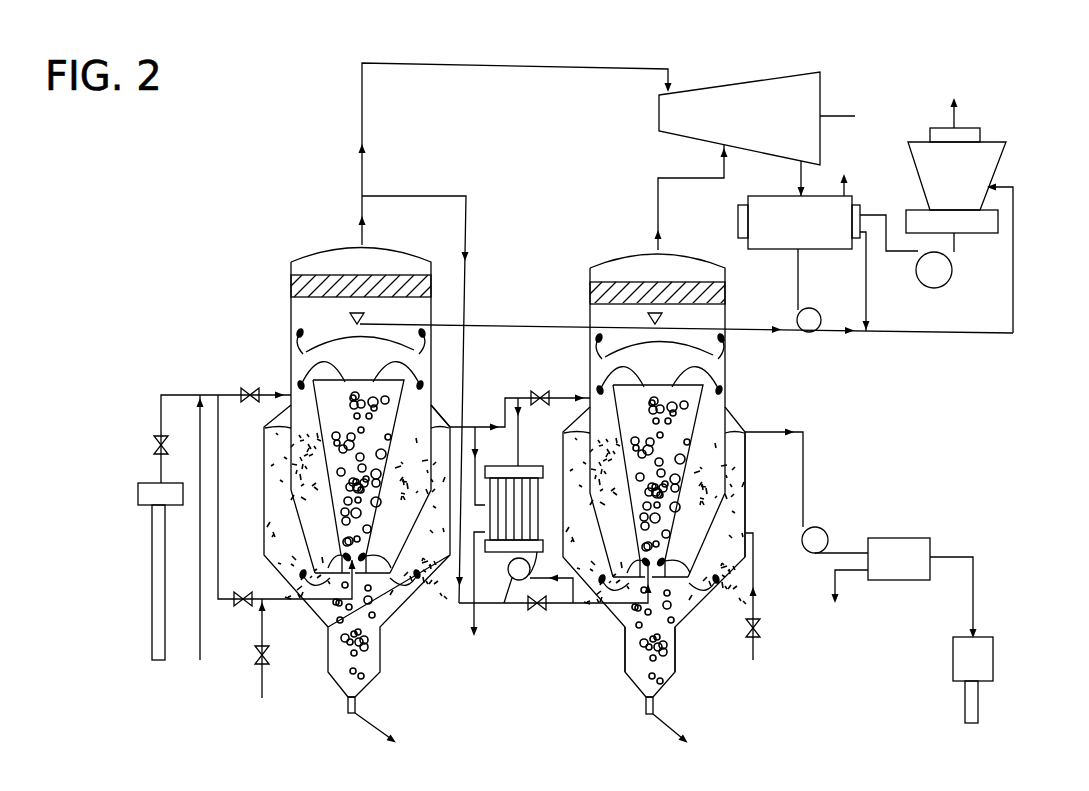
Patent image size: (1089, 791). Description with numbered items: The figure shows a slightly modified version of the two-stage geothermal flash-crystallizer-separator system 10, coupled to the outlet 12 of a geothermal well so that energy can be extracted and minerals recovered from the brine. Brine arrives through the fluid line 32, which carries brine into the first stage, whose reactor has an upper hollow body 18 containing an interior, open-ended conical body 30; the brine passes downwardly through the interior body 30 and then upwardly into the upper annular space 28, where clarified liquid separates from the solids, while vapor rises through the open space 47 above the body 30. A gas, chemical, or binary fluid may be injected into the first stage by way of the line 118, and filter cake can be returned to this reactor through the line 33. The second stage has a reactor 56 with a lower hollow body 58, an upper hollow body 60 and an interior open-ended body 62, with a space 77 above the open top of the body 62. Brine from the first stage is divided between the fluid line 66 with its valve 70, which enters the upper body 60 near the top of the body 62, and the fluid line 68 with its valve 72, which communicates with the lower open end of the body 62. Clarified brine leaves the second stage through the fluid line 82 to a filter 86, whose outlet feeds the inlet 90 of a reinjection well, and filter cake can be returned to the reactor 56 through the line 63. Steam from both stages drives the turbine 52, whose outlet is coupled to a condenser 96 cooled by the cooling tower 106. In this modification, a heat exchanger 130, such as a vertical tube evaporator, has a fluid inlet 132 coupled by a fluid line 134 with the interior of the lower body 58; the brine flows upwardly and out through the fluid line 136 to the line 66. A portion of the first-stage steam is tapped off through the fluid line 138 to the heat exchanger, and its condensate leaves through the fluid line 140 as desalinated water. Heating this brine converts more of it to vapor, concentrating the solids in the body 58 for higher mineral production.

The system 10 is at (246, 298).
The outlet of geothermal well 12 is at (160, 483).
The upper hollow body 18 is at (425, 334).
The upper annular space 28 is at (436, 420).
The interior hollow body 30 is at (330, 483).
The fluid line 32 is at (193, 395).
The line 33 is at (195, 637).
The open space 47 is at (378, 368).
The turbine 52 is at (752, 92).
The reactor 56 is at (708, 623).
The lower hollow body 58 is at (743, 482).
The upper hollow body 60 is at (727, 375).
The interior open end body 62 is at (673, 507).
The line 63 is at (752, 605).
The fluid line 66 is at (518, 398).
The fluid line 68 is at (518, 603).
The valve 70 is at (540, 391).
The valve 72 is at (547, 605).
The space 77 is at (676, 374).
The fluid line 82 is at (765, 430).
The filter 86 is at (895, 537).
The inlet of reinjection well 90 is at (976, 635).
The condenser 96 is at (816, 250).
The cooling tower 106 is at (992, 160).
The line 118 is at (263, 627).
The heat exchanger 130 is at (497, 558).
The fluid inlet 132 is at (510, 603).
The fluid line 134 is at (573, 603).
The fluid line 136 is at (505, 420).
The fluid line 138 is at (500, 212).
The fluid line 140 is at (472, 618).